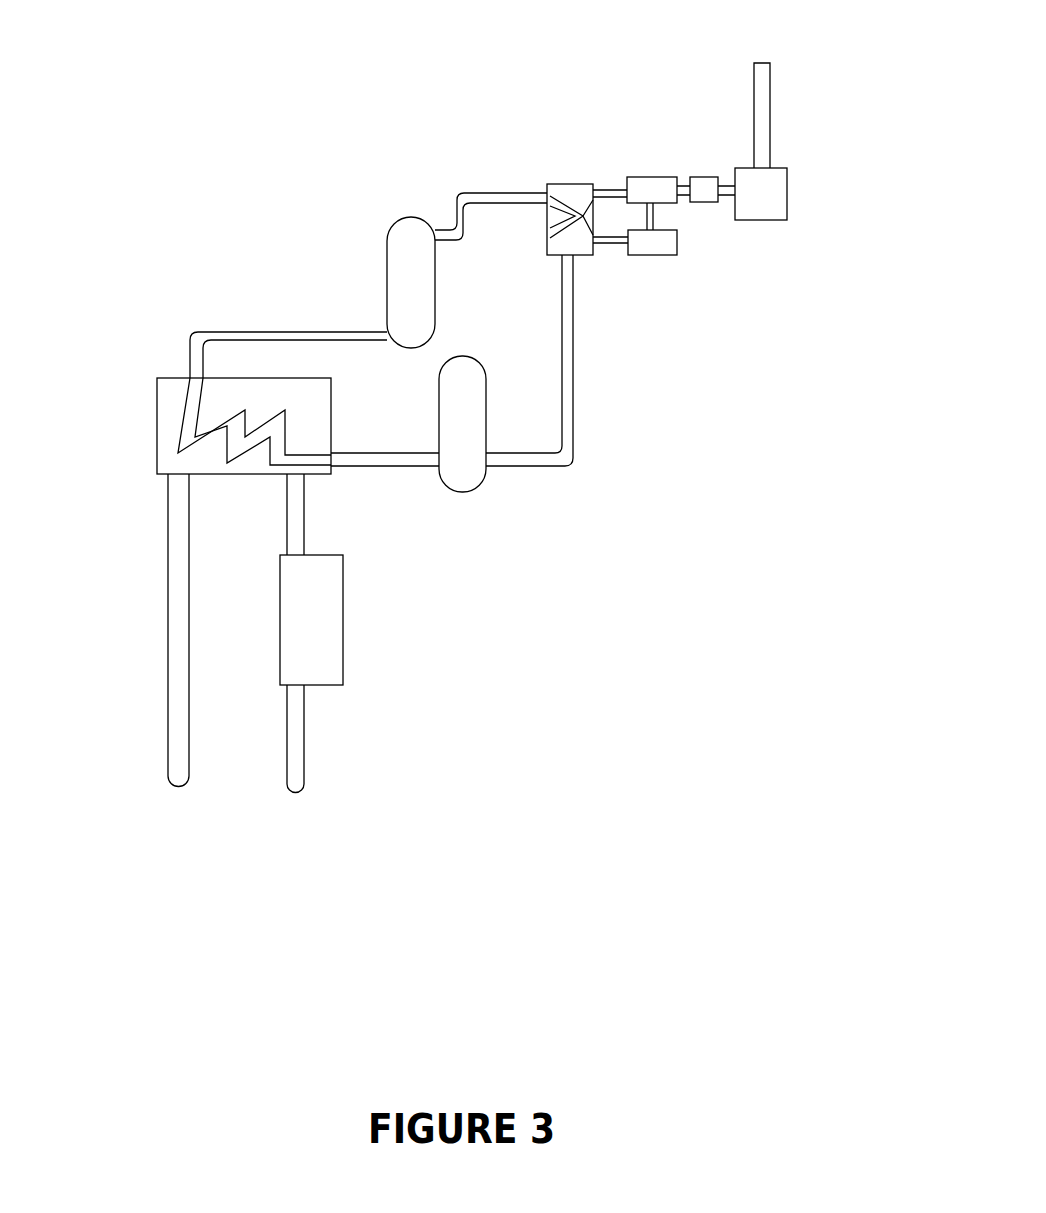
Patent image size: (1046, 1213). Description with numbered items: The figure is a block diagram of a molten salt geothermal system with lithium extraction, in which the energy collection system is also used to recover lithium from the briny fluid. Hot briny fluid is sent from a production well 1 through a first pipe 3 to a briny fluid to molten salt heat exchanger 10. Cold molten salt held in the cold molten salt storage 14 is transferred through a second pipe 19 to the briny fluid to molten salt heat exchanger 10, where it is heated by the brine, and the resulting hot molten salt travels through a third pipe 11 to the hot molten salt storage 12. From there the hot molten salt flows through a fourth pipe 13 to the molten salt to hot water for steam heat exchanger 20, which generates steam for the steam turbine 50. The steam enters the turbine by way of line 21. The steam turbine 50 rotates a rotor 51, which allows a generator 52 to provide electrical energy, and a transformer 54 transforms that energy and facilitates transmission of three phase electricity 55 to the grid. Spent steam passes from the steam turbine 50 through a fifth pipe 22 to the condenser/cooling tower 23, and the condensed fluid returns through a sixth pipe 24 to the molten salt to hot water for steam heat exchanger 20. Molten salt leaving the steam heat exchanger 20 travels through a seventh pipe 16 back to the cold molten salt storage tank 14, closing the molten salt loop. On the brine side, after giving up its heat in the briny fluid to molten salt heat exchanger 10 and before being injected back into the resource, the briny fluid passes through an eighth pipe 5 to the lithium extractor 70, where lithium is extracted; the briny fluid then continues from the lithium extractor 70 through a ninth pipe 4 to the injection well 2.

The production well 1 is at (172, 773).
The injection well 2 is at (300, 786).
The first pipe 3 is at (167, 580).
The ninth pipe 4 is at (306, 712).
The eighth pipe 5 is at (306, 525).
The briny fluid to molten salt heat exchanger 10 is at (155, 378).
The third pipe 11 is at (265, 330).
The hot molten salt storage 12 is at (392, 228).
The fourth pipe 13 is at (480, 193).
The cold molten salt storage 14 is at (484, 488).
The seventh pipe 16 is at (575, 390).
The second pipe 19 is at (386, 476).
The molten salt to hot water for steam heat exchanger 20 is at (570, 183).
The line 21 is at (610, 185).
The fifth pipe 22 is at (656, 218).
The condenser/cooling tower 23 is at (655, 257).
The sixth pipe 24 is at (612, 246).
The steam turbine 50 is at (651, 176).
The rotor 51 is at (682, 180).
The generator 52 is at (700, 176).
The transformer 54 is at (726, 182).
The three phase electricity 55 is at (772, 100).
The lithium extractor 70 is at (344, 621).